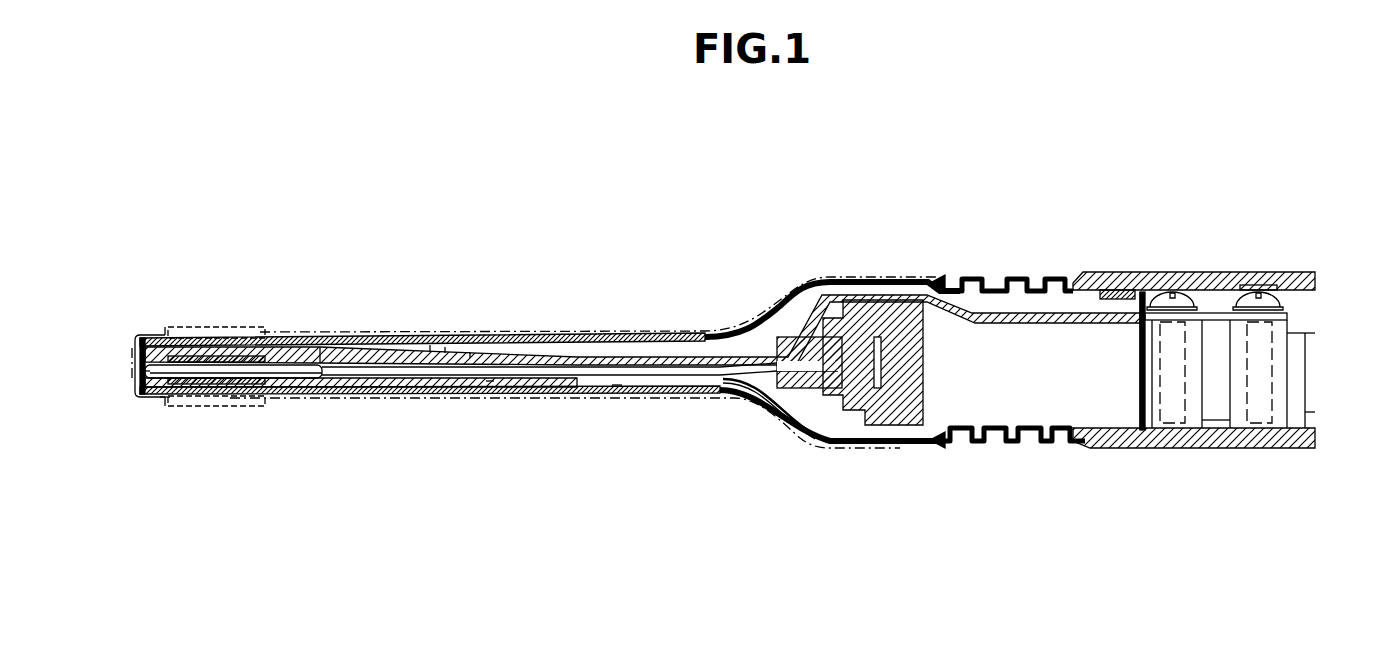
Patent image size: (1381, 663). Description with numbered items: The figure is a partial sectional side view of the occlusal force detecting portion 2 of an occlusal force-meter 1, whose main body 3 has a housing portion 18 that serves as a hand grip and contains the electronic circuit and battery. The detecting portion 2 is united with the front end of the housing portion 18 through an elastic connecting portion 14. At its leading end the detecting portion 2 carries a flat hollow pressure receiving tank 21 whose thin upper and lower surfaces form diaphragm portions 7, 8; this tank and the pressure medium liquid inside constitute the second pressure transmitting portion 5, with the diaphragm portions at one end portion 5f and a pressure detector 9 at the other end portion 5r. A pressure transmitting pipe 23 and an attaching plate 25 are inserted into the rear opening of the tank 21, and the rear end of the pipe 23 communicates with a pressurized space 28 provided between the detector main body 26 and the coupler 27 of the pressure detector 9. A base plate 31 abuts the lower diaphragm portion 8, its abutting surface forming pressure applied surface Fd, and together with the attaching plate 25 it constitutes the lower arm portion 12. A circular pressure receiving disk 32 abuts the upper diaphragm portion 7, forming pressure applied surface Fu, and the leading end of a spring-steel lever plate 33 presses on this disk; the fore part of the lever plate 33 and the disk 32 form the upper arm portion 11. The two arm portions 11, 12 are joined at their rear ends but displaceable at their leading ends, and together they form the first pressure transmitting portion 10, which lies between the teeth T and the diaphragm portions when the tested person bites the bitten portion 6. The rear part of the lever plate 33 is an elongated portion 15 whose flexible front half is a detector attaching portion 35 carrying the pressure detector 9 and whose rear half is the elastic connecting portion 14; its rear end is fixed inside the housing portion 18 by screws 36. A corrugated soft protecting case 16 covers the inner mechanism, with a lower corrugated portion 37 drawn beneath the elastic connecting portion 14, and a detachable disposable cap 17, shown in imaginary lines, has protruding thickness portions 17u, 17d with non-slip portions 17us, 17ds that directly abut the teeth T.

The occlusal force-meter 1 is at (912, 188).
The occlusal force detecting portion 2 is at (547, 324).
The main body 3 is at (1218, 252).
The pressure transmitting portion 5 is at (723, 376).
The one end portion 5f is at (285, 392).
The other end portion 5r is at (803, 408).
The bitten portion 6 is at (316, 414).
The diaphragm portion 7 is at (155, 346).
The diaphragm portion 8 is at (165, 398).
The pressure detector 9 is at (826, 412).
The first pressure transmitting portion 10 is at (470, 356).
The upper arm portion 11 is at (445, 350).
The lower arm portion 12 is at (406, 380).
The elastic connecting portion 14 is at (1008, 463).
The elongated portion 15 is at (990, 312).
The protecting case 16 is at (762, 300).
The disposable cap 17 is at (665, 330).
The thickness portion 17u is at (178, 325).
The thickness portion 17d is at (190, 405).
The non-slip portion 17us is at (222, 326).
The non-slip portion 17ds is at (240, 405).
The housing portion 18 is at (1208, 450).
The pressure receiving tank 21 is at (340, 372).
The pressure transmitting pipe 23 is at (617, 385).
The attaching plate 25 is at (490, 383).
The detector main body 26 is at (898, 447).
The coupler 27 is at (773, 423).
The pressurized space 28 is at (915, 368).
The base plate 31 is at (330, 390).
The pressure receiving disk 32 is at (330, 356).
The lever plate 33 is at (430, 345).
The detector attaching portion 35 is at (810, 290).
The screw 36 is at (1152, 292).
The lower corrugated section 37 is at (980, 447).
The teeth T is at (250, 330).
The pressure applied surface Fu is at (300, 357).
The pressure applied surface Fd is at (215, 392).